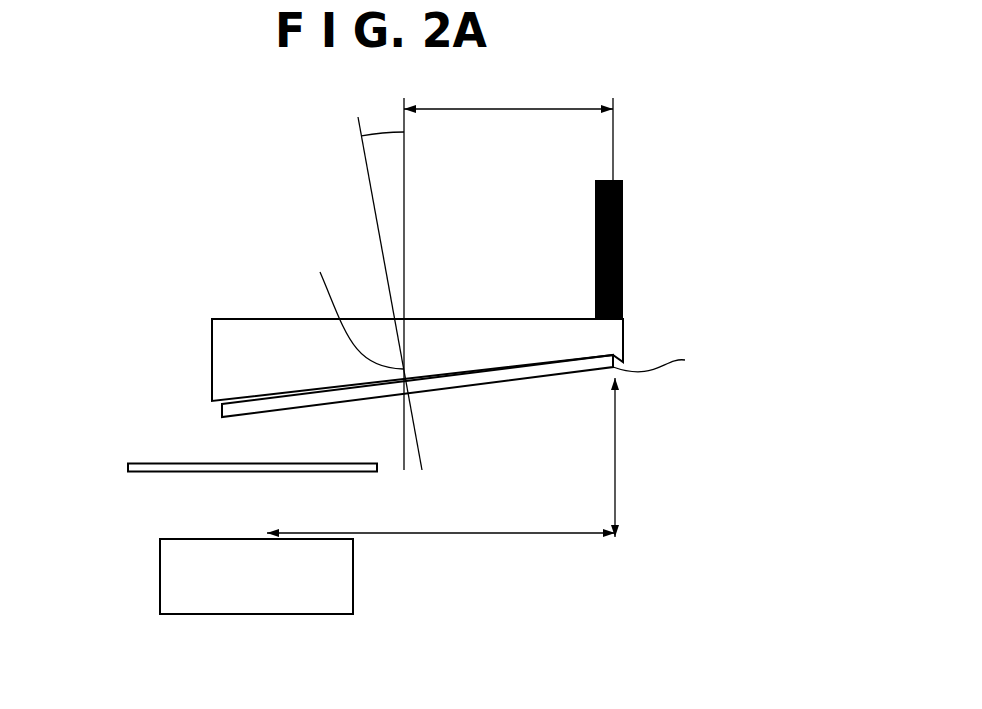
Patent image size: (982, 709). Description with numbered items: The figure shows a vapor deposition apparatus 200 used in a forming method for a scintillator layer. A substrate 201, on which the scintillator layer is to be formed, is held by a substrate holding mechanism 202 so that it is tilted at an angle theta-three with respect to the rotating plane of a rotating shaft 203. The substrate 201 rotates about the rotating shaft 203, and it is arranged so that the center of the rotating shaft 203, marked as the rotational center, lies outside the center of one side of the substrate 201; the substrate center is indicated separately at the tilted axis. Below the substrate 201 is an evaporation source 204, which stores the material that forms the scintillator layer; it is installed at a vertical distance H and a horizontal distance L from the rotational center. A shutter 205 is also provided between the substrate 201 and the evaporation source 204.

The vapor deposition apparatus 200 is at (180, 189).
The substrate 201 is at (222, 410).
The substrate holding mechanism 202 is at (212, 343).
The rotating shaft 203 is at (623, 227).
The evaporation source 204 is at (160, 575).
The shutter 205 is at (128, 467).